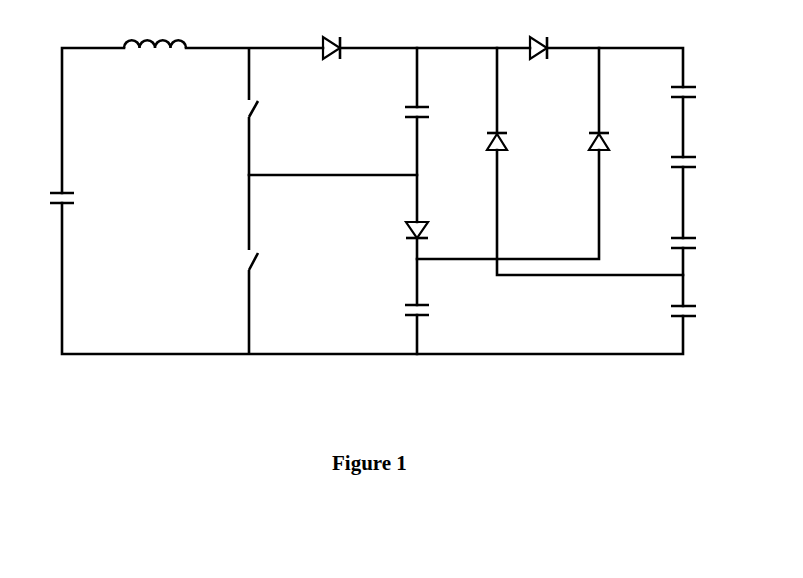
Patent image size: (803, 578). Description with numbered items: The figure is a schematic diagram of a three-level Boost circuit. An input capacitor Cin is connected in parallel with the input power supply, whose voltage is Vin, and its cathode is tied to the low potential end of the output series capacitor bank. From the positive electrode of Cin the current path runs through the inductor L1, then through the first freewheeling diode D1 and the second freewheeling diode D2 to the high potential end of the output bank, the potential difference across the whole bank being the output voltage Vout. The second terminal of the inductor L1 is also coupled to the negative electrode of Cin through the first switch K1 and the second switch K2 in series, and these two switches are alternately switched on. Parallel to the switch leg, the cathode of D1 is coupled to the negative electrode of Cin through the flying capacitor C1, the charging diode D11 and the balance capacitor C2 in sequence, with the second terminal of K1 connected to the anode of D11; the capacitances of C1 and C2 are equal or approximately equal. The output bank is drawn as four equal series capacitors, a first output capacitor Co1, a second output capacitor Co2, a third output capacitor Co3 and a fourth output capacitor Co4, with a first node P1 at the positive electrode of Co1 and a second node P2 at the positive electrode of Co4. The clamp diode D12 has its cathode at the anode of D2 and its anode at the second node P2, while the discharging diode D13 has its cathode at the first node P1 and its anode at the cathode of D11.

The inductor L1 is at (155, 29).
The voltage of the input power supply Vin is at (33, 143).
The input capacitor Cin is at (79, 199).
The first switch K1 is at (232, 111).
The second switch K2 is at (229, 264).
The first freewheeling diode D1 is at (333, 34).
The second freewheeling diode D2 is at (540, 34).
The flying capacitor C1 is at (401, 114).
The balance capacitor C2 is at (400, 312).
The charging diode D11 is at (395, 234).
The clamp diode D12 is at (472, 145).
The discharging diode D13 is at (575, 145).
The first node P1 is at (599, 35).
The second node P2 is at (706, 276).
The output voltage Vout is at (721, 73).
The first output capacitor Co1 is at (663, 98).
The second output capacitor Co2 is at (663, 165).
The third output capacitor Co3 is at (663, 246).
The fourth output capacitor Co4 is at (663, 314).